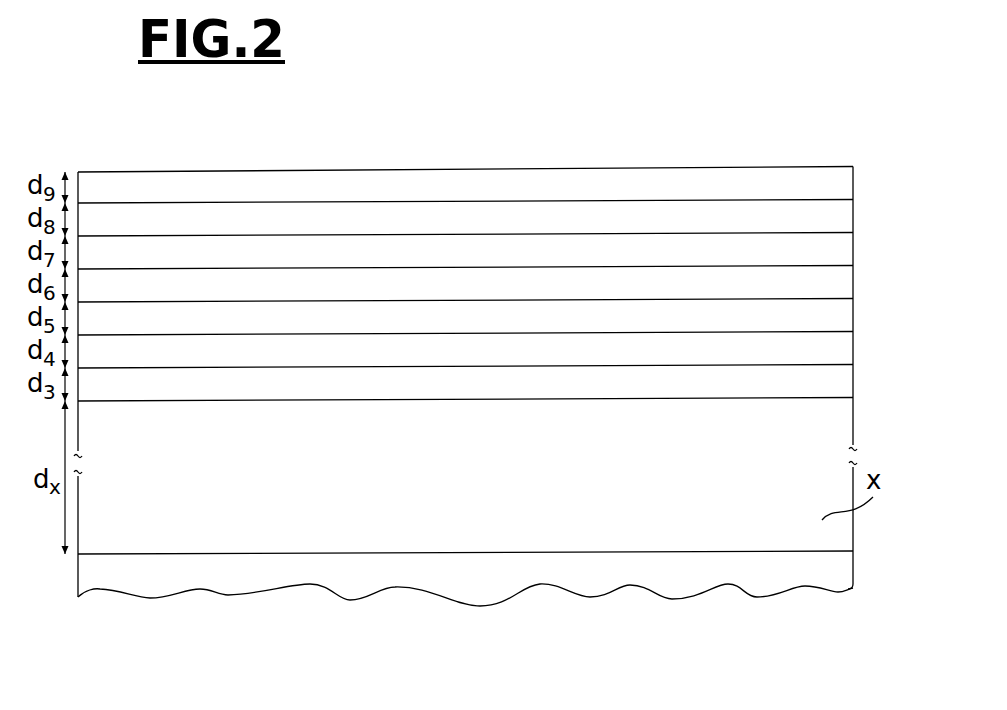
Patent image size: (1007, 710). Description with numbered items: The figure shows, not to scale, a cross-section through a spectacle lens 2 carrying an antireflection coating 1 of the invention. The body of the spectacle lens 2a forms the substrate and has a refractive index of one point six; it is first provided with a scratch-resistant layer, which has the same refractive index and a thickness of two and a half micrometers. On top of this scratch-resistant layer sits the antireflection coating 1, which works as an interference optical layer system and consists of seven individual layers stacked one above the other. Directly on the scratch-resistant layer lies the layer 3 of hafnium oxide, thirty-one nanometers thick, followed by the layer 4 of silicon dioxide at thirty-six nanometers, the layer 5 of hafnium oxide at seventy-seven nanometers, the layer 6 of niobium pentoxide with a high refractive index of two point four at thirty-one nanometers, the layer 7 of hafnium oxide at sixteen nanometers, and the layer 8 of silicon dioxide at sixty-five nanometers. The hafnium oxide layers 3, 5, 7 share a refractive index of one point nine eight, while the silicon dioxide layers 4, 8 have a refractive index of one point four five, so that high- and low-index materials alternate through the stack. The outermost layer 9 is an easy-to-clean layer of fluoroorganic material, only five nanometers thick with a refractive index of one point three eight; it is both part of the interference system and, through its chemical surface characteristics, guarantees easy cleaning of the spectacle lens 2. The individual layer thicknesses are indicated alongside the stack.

The antireflection coating 1 is at (855, 166).
The spectacle lens 2 is at (719, 146).
The spectacle lens substrate 2a is at (827, 575).
The layer 3 is at (506, 385).
The layer 4 is at (437, 348).
The layer 5 is at (370, 313).
The layer 6 is at (312, 282).
The layer 7 is at (243, 247).
The layer 8 is at (190, 215).
The easy-to-clean layer 9 is at (154, 187).